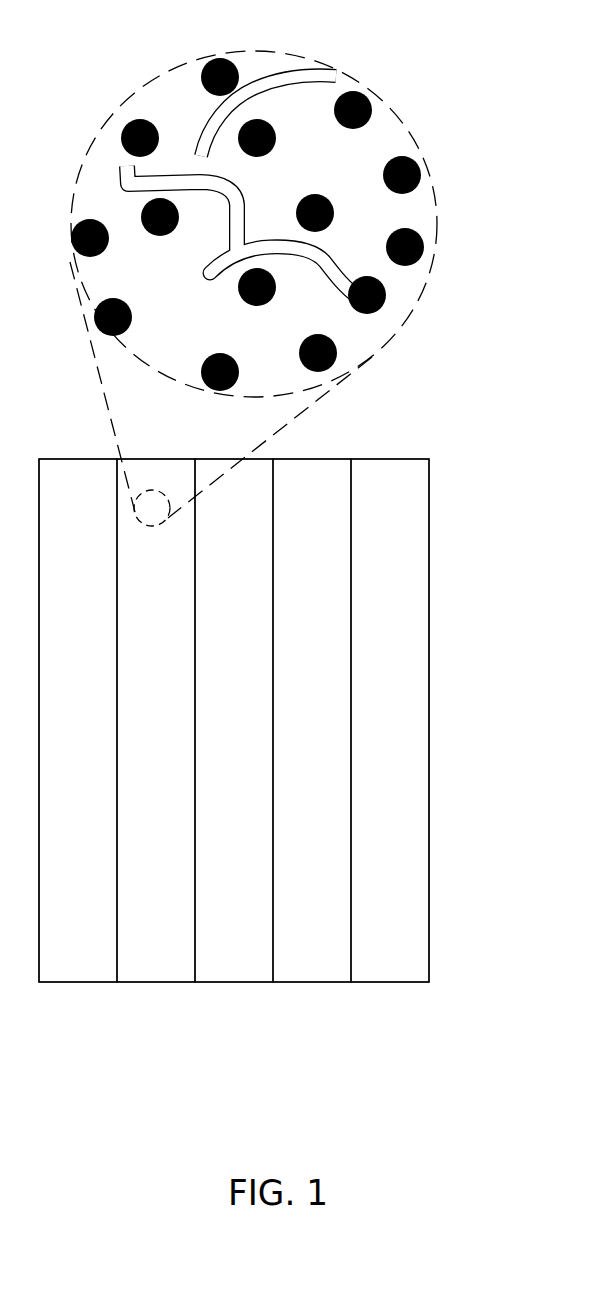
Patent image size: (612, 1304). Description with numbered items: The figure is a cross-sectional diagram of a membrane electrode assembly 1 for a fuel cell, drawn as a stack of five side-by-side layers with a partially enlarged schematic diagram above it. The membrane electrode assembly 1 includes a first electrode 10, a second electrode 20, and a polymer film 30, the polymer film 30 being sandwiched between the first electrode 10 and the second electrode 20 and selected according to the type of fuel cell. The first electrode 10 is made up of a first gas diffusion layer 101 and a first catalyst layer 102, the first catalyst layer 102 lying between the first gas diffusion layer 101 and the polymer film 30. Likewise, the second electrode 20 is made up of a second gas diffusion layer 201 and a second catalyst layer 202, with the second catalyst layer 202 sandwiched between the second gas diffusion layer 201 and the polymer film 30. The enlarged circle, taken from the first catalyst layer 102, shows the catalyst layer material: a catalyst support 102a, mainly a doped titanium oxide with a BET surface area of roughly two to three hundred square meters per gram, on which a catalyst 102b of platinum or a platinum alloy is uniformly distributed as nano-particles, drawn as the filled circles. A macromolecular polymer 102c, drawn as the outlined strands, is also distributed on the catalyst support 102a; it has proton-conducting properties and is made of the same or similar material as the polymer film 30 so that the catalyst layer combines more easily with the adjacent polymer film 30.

The membrane electrode assembly 1 is at (490, 977).
The first electrode 10 is at (115, 795).
The first gas diffusion layer 101 is at (85, 962).
The first catalyst layer 102 is at (153, 754).
The catalyst support 102a is at (386, 143).
The catalyst 102b is at (206, 62).
The macromolecular polymer 102c is at (301, 79).
The polymer film 30 is at (232, 962).
The second electrode 20 is at (348, 795).
The second catalyst layer 202 is at (308, 962).
The second gas diffusion layer 201 is at (390, 754).